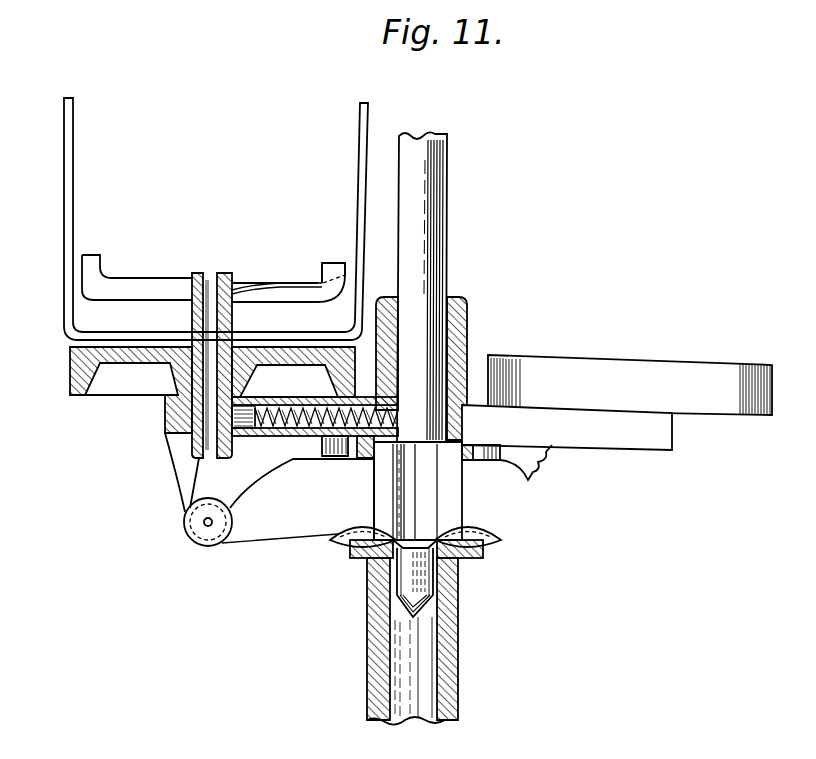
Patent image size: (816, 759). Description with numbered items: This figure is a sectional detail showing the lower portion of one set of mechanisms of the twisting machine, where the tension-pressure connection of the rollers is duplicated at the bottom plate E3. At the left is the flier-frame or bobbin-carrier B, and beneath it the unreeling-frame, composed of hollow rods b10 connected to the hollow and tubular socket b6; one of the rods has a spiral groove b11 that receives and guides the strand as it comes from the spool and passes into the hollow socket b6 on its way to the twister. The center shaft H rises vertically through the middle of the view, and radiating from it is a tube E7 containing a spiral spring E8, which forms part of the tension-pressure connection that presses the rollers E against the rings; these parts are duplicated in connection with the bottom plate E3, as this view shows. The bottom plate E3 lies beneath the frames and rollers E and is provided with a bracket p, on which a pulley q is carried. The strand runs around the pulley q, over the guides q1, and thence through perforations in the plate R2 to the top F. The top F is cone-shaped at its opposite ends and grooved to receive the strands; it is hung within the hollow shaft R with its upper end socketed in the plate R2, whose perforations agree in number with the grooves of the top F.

The flier-frame or bobbin-carrier B is at (64, 212).
The hollow tubular socket b6 is at (233, 275).
The hollow rods b10 is at (325, 272).
The spiral groove b11 is at (283, 296).
The rollers E is at (630, 385).
The bottom plate E3 is at (567, 427).
The tubes E7 is at (270, 402).
The spiral spring E8 is at (272, 427).
The center shaft H is at (447, 228).
The brackets p is at (185, 488).
The pulleys q is at (210, 547).
The guides q1 is at (356, 528).
The hollow shaft R is at (459, 642).
The plate R2 is at (480, 572).
The top F is at (410, 575).